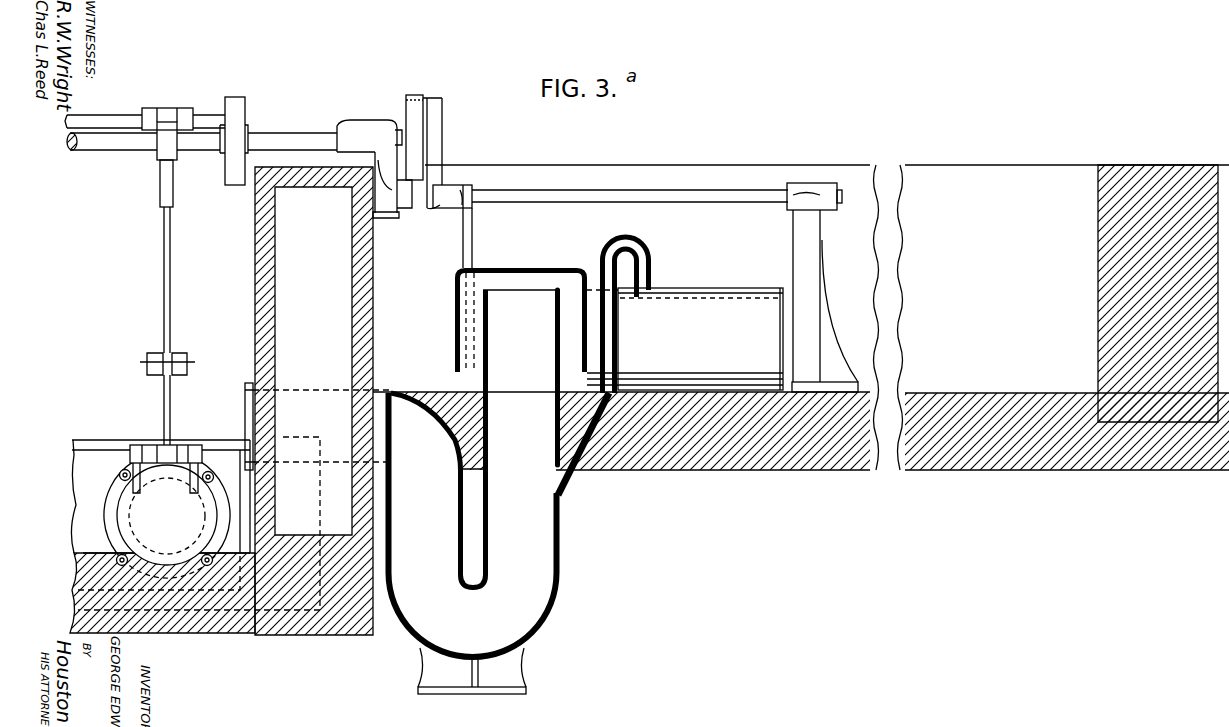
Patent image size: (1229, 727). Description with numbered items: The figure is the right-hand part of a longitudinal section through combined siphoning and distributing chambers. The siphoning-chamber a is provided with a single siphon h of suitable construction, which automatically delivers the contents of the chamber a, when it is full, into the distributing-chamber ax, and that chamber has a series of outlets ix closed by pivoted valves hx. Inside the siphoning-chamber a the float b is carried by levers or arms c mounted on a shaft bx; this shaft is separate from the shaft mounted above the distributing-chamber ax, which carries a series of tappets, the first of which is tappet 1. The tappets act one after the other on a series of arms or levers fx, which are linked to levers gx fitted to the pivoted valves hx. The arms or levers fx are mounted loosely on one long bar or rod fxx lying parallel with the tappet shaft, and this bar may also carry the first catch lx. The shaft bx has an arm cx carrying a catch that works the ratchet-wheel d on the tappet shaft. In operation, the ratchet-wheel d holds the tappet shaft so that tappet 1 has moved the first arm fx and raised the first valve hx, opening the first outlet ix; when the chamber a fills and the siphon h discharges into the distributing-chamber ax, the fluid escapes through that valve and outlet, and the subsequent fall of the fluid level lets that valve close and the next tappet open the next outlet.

The siphoning-chamber a is at (649, 400).
The distributing-chamber ax is at (157, 509).
The pivoted valve hx is at (210, 542).
The outlet ix is at (131, 506).
The lever gx is at (170, 412).
The arm or lever fx is at (171, 287).
The tappet 1 is at (173, 184).
The long bar or rod fxx is at (84, 116).
The first catch lx is at (83, 150).
The ratchet-wheel d is at (408, 112).
The arm cx is at (443, 148).
The lever or arm c is at (472, 245).
The shaft bx is at (630, 187).
The float b is at (685, 315).
The siphon h is at (499, 483).